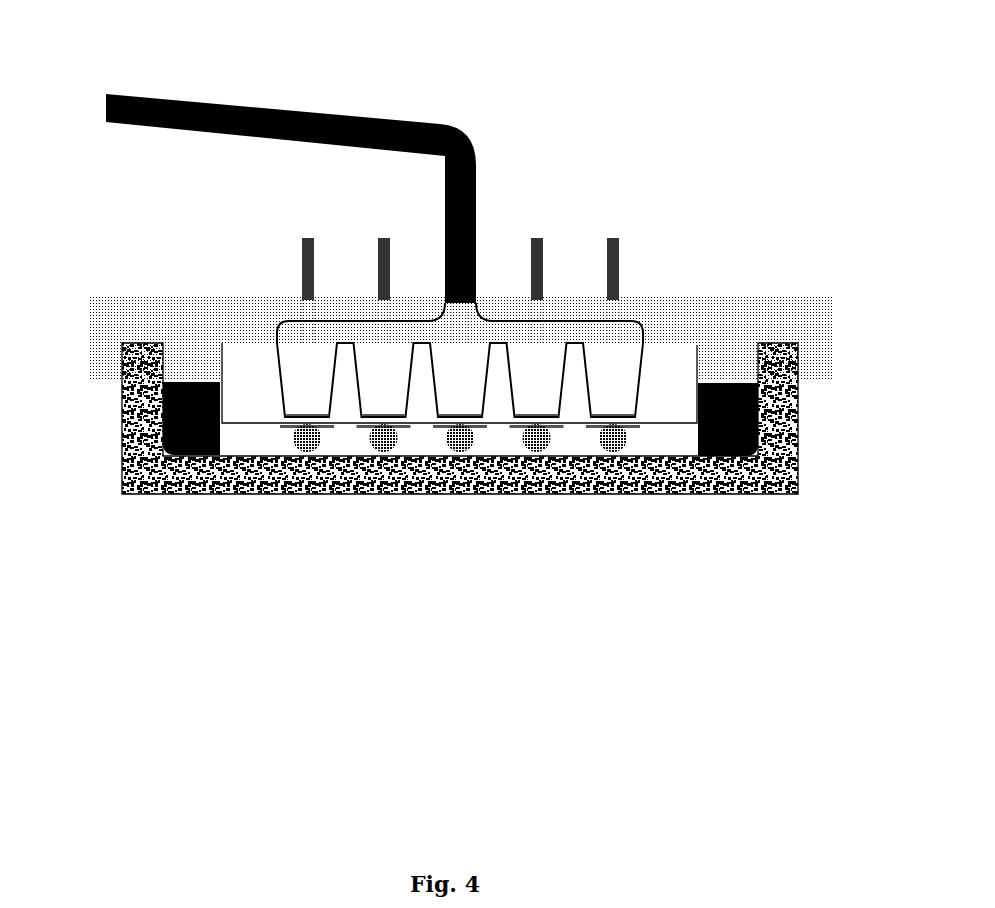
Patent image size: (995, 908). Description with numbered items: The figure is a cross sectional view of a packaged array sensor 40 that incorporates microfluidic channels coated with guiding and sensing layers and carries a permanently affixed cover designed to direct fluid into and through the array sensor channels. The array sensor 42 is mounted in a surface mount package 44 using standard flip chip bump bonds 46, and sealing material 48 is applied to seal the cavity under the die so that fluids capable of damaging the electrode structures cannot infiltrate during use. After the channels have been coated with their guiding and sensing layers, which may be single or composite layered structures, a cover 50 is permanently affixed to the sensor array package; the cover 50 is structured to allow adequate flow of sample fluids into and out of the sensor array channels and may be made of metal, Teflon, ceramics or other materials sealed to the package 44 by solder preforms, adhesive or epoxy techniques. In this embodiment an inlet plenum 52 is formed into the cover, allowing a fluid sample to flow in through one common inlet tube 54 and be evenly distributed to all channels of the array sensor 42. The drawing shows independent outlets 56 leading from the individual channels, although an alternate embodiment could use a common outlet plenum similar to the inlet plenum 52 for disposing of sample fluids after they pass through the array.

The packaged array sensor 40 is at (722, 203).
The array sensor 42 is at (252, 403).
The surface mount package 44 is at (121, 407).
The flip chip bump bonds 46 is at (613, 453).
The sealing material 48 is at (180, 432).
The cover 50 is at (768, 315).
The inlet plenum 52 is at (281, 328).
The common inlet tube 54 is at (455, 130).
The independent outlets 56 is at (603, 278).